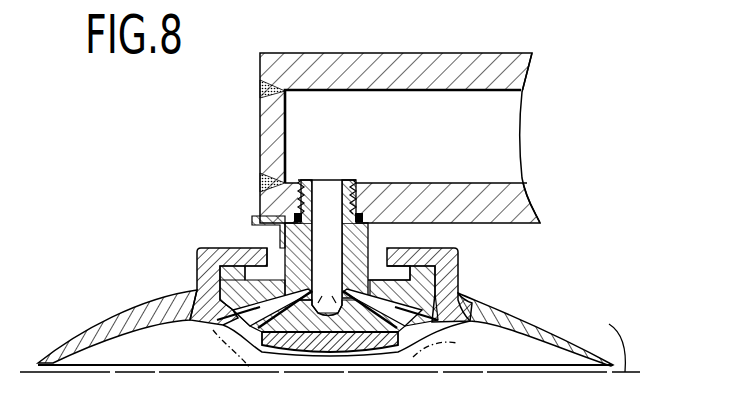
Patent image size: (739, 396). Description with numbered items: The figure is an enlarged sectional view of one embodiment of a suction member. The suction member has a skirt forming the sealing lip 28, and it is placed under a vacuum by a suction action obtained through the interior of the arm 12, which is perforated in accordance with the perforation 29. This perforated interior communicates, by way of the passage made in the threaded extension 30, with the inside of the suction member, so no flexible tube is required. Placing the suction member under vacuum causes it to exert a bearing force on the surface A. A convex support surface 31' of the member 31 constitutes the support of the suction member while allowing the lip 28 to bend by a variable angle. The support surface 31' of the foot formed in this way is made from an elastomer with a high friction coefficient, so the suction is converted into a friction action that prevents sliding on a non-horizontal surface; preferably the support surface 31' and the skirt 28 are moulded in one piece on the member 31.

The arm 12 is at (477, 224).
The perforation 29 is at (379, 136).
The threaded extension 30 is at (362, 204).
The member 31 is at (234, 264).
The convex support surface 31' is at (490, 307).
The sealing lip 28 is at (120, 322).
The surface A is at (611, 337).